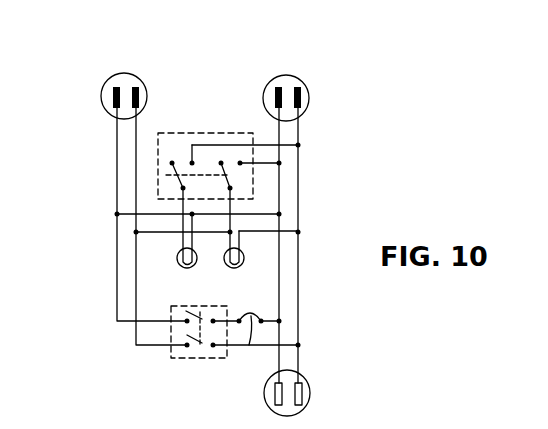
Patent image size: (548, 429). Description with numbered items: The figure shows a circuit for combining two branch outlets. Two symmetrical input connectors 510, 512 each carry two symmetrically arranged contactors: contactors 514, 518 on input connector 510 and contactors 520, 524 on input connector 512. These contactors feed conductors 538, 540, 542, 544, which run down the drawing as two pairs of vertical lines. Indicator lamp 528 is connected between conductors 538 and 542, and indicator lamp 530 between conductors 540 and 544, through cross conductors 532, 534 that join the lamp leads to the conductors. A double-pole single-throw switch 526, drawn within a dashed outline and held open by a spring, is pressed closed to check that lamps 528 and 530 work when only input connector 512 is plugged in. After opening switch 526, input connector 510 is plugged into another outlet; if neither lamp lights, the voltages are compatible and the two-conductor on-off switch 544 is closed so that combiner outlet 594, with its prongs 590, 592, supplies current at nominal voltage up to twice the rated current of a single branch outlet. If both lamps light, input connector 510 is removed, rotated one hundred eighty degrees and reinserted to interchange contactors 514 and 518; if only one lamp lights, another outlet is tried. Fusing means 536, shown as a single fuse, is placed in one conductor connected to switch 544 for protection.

The input connector 510 is at (122, 66).
The input connector 512 is at (286, 68).
The contactor 514 is at (112, 90).
The contactor 518 is at (139, 88).
The contactor 520 is at (275, 92).
The contactor 524 is at (301, 90).
The double-pole single-throw switch 526 is at (214, 131).
The indicator lamp 528 is at (187, 268).
The indicator lamp 530 is at (235, 268).
The conductor 532 is at (308, 232).
The conductor 534 is at (136, 233).
The fusing means 536 is at (258, 341).
The conductor 538 is at (117, 144).
The conductor 540 is at (136, 177).
The conductor 542 is at (281, 302).
The switch 544 is at (298, 268).
The prong of outlet plug 590 is at (275, 397).
The prong of outlet plug 592 is at (302, 397).
The combiner outlet 594 is at (311, 371).